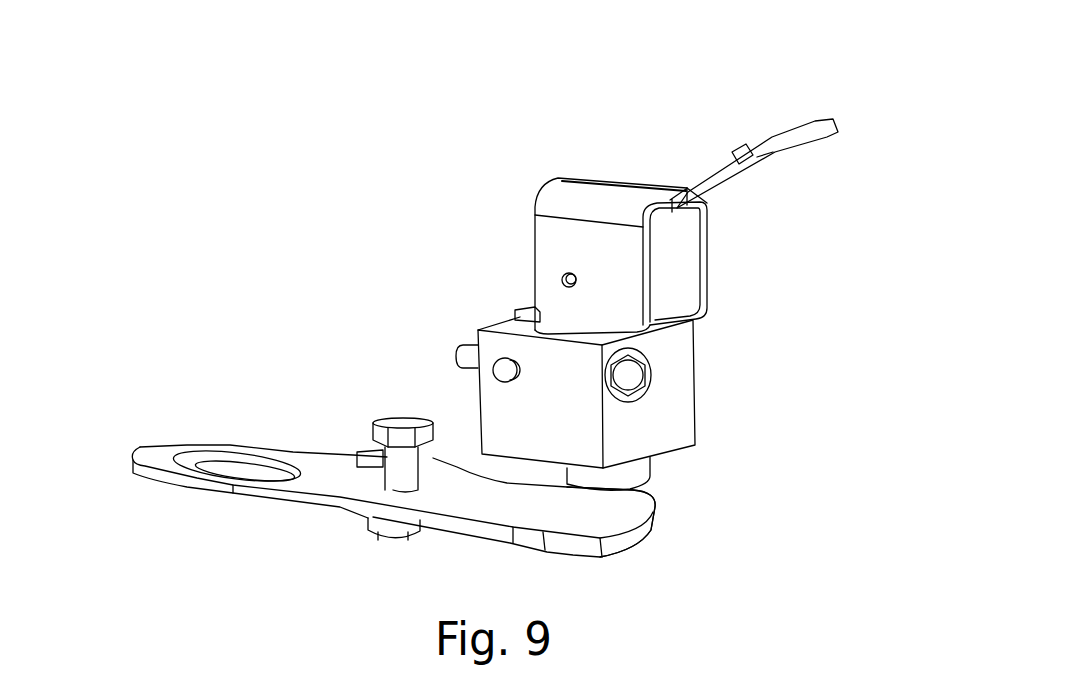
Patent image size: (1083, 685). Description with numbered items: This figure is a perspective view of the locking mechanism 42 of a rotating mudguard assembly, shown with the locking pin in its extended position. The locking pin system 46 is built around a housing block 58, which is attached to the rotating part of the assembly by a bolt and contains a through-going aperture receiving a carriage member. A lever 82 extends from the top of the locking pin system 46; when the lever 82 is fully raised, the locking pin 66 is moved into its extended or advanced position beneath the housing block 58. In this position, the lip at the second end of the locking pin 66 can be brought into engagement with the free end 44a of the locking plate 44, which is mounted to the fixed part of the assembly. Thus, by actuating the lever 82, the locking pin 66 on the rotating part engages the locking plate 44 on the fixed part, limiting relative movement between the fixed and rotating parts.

The locking mechanism 42 is at (163, 108).
The locking plate 44 is at (353, 500).
The free end of the locking plate 44a is at (697, 545).
The locking pin system 46 is at (438, 231).
The housing block 58 is at (683, 413).
The locking pin 66 is at (637, 475).
The lever 82 is at (733, 175).